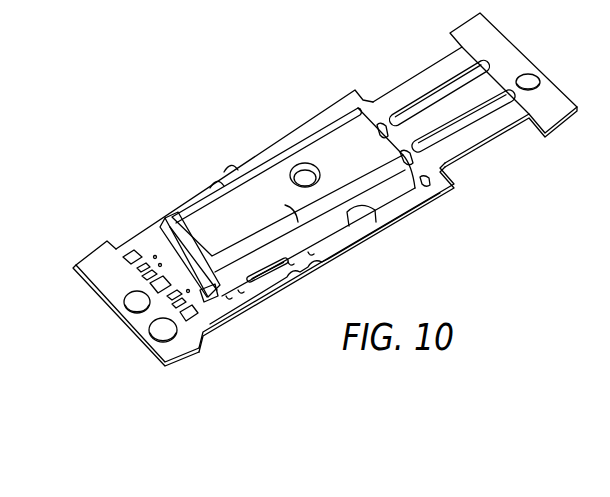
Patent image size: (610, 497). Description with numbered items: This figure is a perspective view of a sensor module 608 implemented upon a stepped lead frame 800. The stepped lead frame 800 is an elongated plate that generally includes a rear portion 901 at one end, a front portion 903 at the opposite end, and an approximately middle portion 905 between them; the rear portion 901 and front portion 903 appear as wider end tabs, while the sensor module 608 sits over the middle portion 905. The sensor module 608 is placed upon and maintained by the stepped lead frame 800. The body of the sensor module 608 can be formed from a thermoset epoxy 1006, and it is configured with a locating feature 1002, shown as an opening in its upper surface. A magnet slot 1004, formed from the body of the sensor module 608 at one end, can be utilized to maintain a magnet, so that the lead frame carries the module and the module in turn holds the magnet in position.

The stepped lead frame 800 is at (317, 189).
The rear portion 901 is at (507, 57).
The front portion 903 is at (113, 288).
The middle portion 905 is at (334, 250).
The sensor module 608 is at (293, 201).
The locating feature 1002 is at (293, 166).
The magnet slot 1004 is at (193, 236).
The thermoset epoxy 1006 is at (336, 223).